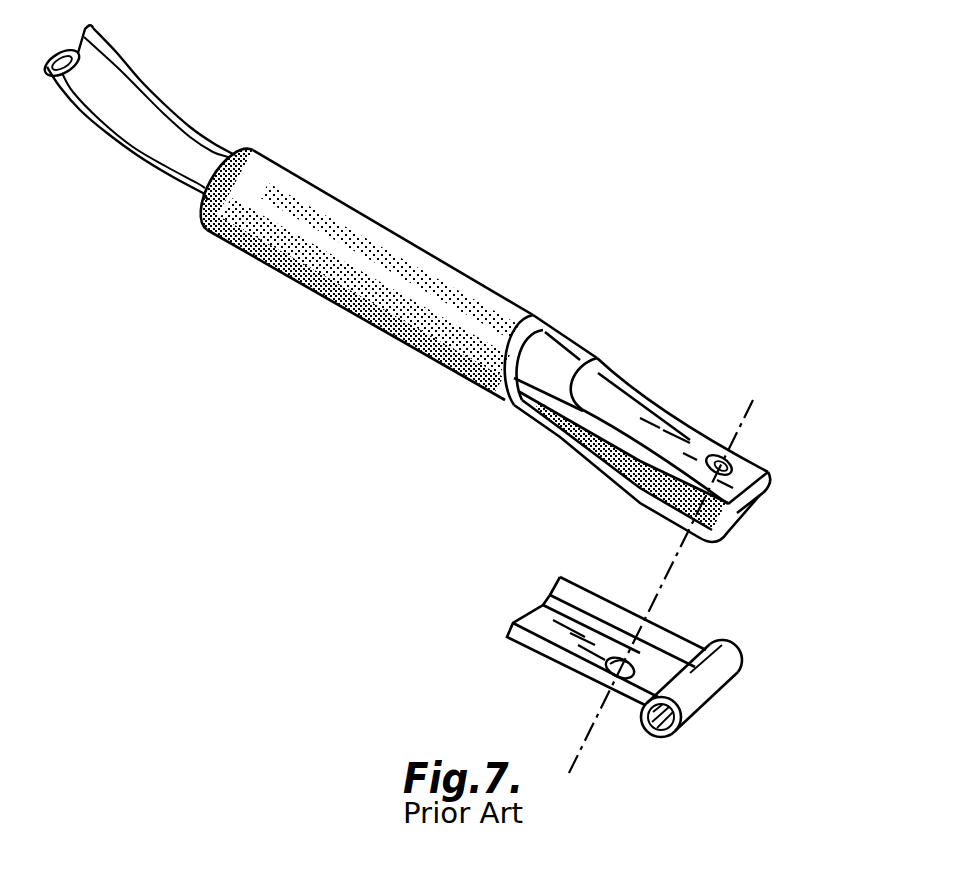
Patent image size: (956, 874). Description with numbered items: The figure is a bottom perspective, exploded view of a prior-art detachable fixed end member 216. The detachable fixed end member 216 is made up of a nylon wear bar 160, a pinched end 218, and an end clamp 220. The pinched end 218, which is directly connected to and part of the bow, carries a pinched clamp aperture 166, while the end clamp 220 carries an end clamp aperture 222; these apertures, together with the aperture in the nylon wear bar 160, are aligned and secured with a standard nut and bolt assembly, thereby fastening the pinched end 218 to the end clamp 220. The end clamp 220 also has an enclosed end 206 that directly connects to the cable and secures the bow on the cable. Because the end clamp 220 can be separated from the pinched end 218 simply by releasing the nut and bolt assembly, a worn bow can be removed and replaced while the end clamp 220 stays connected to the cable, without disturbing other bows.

The nylon wear bar 160 is at (322, 292).
The detachable fixed end member 216 is at (647, 320).
The pinched clamp aperture 166 is at (733, 464).
The pinched end 218 is at (802, 501).
The end clamp 220 is at (578, 682).
The end clamp aperture 222 is at (628, 664).
The enclosed end 206 is at (695, 682).